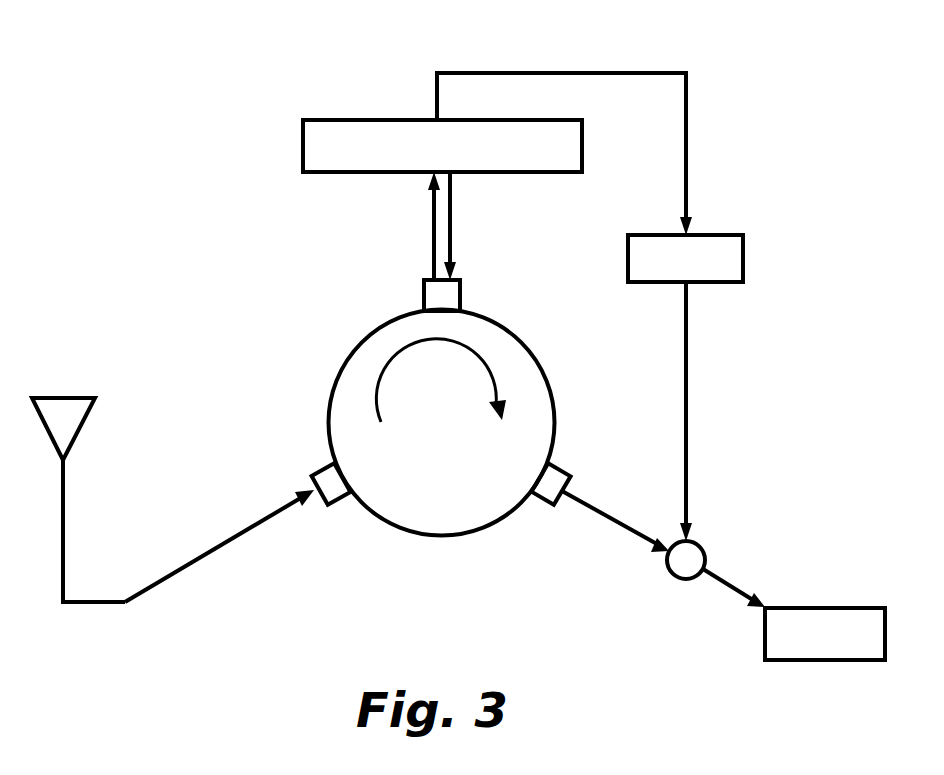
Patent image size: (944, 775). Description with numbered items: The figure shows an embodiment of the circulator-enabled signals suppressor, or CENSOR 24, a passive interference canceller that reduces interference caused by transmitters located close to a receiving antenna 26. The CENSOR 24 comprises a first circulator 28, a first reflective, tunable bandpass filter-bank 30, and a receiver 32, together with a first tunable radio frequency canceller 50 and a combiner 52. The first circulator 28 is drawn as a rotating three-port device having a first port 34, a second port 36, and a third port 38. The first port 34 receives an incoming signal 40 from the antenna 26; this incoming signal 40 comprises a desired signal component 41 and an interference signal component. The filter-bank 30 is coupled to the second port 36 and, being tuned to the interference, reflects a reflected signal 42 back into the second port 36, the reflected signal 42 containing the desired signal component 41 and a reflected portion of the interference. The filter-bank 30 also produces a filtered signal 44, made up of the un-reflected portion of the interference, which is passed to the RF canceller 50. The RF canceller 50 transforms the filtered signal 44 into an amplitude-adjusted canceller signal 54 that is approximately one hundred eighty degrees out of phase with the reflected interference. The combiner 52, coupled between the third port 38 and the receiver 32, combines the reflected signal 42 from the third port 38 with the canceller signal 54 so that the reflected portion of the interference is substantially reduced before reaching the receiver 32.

The circulator-enabled signals suppressor (CENSOR) 24 is at (146, 175).
The receiving antenna 26 is at (72, 396).
The first circulator 28 is at (424, 466).
The first reflective, tunable bandpass filter-bank 30 is at (420, 156).
The receiver 32 is at (808, 648).
The first port 34 is at (328, 470).
The second port 36 is at (423, 300).
The third port 38 is at (556, 466).
The incoming signal 40 is at (215, 553).
The desired signal component 41 is at (726, 578).
The reflected signal 42 is at (450, 200).
The filtered signal 44 is at (433, 93).
The first tunable radio frequency (RF) canceller 50 is at (669, 273).
The combiner 52 is at (680, 579).
The canceller signal 54 is at (686, 389).